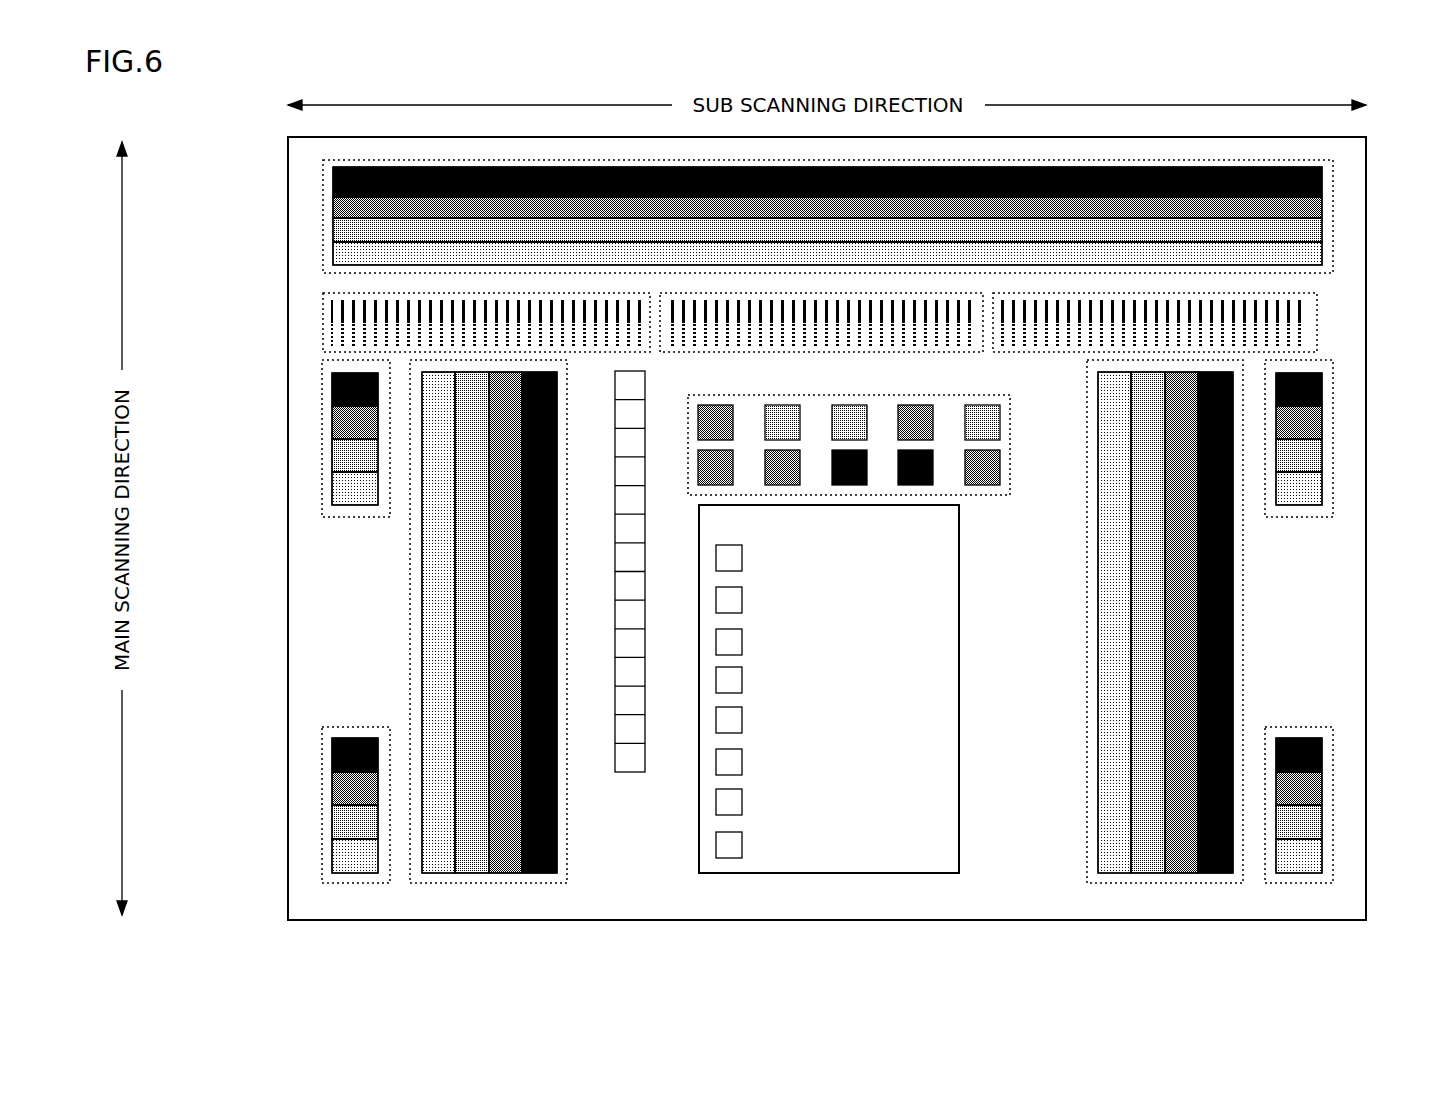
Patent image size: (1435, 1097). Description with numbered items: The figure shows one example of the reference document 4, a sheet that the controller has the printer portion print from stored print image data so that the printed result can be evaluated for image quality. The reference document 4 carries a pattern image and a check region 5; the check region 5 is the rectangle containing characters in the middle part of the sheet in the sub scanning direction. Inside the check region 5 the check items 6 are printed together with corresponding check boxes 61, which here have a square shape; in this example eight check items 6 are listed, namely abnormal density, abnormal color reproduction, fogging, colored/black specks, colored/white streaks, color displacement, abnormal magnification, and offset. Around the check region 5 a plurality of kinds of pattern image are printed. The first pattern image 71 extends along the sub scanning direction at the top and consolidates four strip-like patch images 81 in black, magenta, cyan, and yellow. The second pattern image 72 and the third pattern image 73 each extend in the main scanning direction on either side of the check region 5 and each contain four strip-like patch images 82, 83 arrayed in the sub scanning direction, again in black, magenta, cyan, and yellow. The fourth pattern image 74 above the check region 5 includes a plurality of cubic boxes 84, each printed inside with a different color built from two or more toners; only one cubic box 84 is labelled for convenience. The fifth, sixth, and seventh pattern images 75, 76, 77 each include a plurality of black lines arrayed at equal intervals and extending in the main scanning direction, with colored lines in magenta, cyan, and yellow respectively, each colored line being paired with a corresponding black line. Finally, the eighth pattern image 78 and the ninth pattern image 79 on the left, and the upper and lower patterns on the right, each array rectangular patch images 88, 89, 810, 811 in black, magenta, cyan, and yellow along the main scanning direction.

The reference document 4 is at (1352, 150).
The check region 5 is at (836, 689).
The check items 6 is at (913, 540).
The check boxes 61 is at (716, 558).
The first pattern image 71 is at (828, 510).
The second pattern image 72 is at (439, 663).
The third pattern image 73 is at (1116, 663).
The fourth pattern image 74 is at (879, 470).
The fifth pattern image 75 is at (312, 318).
The sixth pattern image 76 is at (687, 359).
The seventh pattern image 77 is at (1330, 325).
The eighth pattern image 78 is at (306, 451).
The ninth pattern image 79 is at (306, 795).
The patch images 81 is at (1316, 182).
The patch images 82 is at (438, 862).
The patch images 83 is at (1114, 862).
The cubic boxes 84 is at (983, 487).
The patch images 88 is at (345, 392).
The patch images 89 is at (345, 757).
The patch images 810 is at (1305, 390).
The patch images 811 is at (1305, 755).